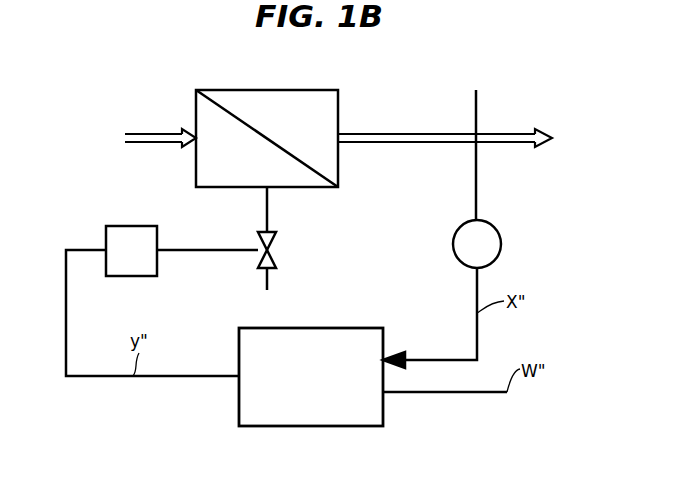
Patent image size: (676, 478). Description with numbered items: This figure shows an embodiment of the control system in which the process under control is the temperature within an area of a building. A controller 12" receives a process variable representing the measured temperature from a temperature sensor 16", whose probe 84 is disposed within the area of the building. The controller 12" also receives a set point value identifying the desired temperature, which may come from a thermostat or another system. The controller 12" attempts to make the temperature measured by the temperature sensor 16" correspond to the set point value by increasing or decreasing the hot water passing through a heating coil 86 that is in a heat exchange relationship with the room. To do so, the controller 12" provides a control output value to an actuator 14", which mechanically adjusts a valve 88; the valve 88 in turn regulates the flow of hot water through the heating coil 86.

The heating coil 86 is at (272, 88).
The probe 84 is at (478, 114).
The temperature sensor 16 is at (501, 243).
The controller 12 is at (313, 328).
The actuator 14 is at (130, 226).
The valve 88 is at (273, 243).